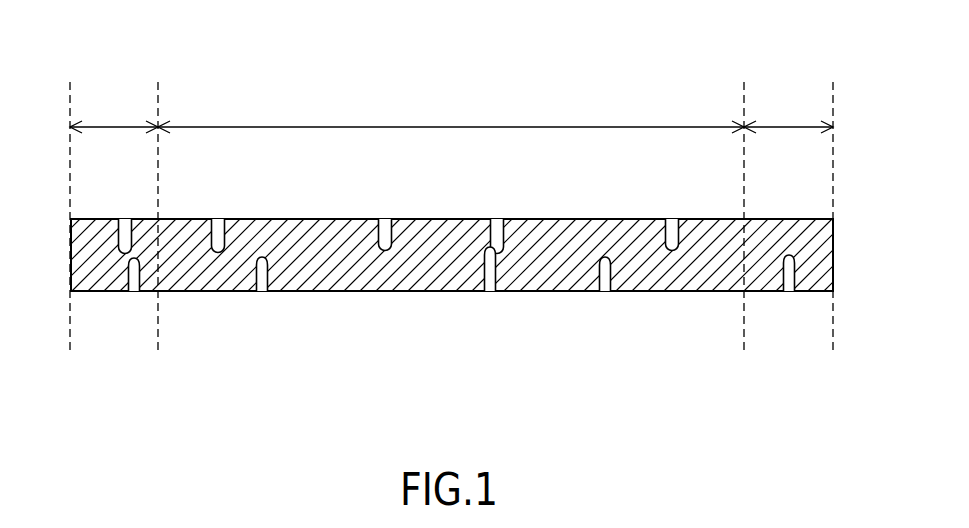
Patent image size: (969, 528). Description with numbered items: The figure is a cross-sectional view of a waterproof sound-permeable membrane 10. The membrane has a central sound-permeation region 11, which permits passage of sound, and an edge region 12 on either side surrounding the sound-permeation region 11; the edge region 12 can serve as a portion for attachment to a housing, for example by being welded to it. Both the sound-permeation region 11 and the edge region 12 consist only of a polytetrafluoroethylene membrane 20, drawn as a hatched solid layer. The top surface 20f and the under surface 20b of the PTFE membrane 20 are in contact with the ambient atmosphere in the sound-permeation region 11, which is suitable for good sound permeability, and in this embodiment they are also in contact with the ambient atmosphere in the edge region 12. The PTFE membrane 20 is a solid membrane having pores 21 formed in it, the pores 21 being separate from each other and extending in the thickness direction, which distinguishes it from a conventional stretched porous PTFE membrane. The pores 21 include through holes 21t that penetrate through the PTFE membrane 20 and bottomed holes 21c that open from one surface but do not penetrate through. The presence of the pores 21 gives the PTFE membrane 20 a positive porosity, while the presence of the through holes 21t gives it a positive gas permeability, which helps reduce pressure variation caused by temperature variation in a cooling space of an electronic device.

The waterproof sound-permeable membrane 10 is at (723, 81).
The sound-permeation region 11 is at (458, 127).
The edge region 12 is at (115, 127).
The polytetrafluoroethylene (PTFE) membrane 20 is at (375, 291).
The top surface 20f is at (251, 219).
The under surface 20b is at (228, 291).
The pores 21 is at (643, 385).
The through holes 21t is at (488, 291).
The bottomed holes 21c is at (604, 291).